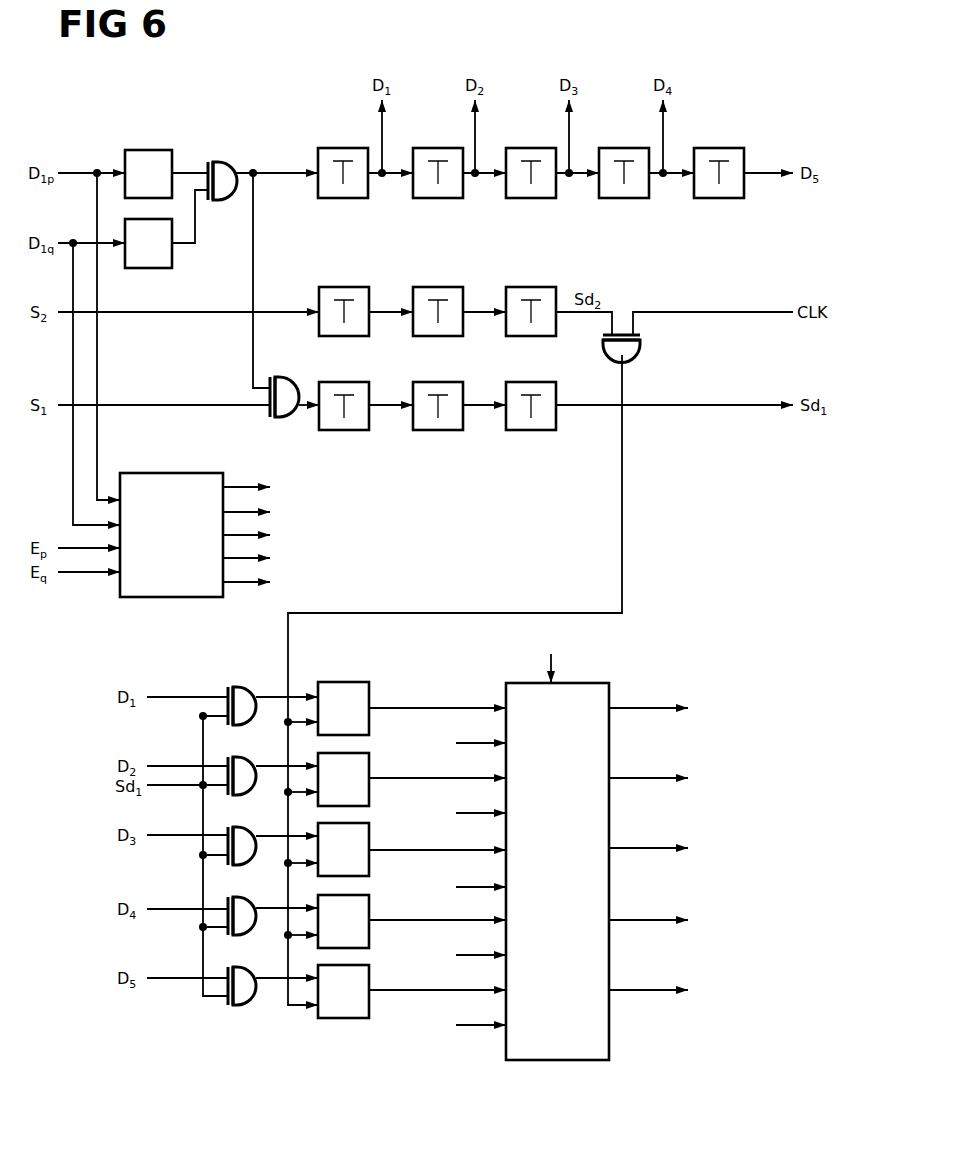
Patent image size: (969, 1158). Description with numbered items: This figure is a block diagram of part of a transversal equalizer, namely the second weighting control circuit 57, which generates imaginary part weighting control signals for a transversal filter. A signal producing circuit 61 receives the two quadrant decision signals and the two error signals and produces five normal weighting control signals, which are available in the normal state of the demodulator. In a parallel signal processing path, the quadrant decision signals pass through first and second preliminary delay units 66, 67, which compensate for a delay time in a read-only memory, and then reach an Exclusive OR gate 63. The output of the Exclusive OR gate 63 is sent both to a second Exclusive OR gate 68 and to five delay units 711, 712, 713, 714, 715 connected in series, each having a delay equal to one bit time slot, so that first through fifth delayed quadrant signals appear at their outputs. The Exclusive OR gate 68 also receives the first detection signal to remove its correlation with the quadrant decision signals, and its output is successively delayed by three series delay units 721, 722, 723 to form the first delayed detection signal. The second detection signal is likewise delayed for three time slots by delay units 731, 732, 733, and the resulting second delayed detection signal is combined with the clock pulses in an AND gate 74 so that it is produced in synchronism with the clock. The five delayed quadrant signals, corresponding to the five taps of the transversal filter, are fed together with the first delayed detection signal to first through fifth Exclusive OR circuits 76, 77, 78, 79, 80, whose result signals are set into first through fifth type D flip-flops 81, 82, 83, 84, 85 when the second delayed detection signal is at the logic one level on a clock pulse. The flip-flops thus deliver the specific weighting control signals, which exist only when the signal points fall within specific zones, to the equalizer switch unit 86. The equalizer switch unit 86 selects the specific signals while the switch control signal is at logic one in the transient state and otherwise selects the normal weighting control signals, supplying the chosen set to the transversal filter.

The second weighting control circuit 57 is at (214, 1058).
The signal producing circuit 61 is at (192, 473).
The Exclusive OR gate 63 is at (226, 162).
The first preliminary delay unit 66 is at (146, 150).
The second preliminary delay unit 67 is at (160, 268).
The Exclusive OR gate 68 is at (283, 377).
The AND gate 74 is at (640, 348).
The first Exclusive OR circuit 76 is at (240, 687).
The second Exclusive OR circuit 77 is at (240, 757).
The third Exclusive OR circuit 78 is at (240, 827).
The fourth Exclusive OR circuit 79 is at (240, 897).
The fifth Exclusive OR circuit 80 is at (240, 967).
The first type D flip-flop 81 is at (370, 722).
The second type D flip-flop 82 is at (370, 793).
The third type D flip-flop 83 is at (370, 863).
The fourth type D flip-flop 84 is at (370, 935).
The fifth type D flip-flop 85 is at (370, 1005).
The equalizer switch unit 86 is at (583, 683).
The delay unit 711 is at (354, 136).
The delay unit 712 is at (449, 136).
The delay unit 713 is at (542, 136).
The delay unit 714 is at (635, 136).
The delay unit 715 is at (730, 136).
The delay unit 721 is at (355, 370).
The delay unit 722 is at (449, 370).
The delay unit 723 is at (542, 370).
The delay unit 731 is at (355, 275).
The delay unit 732 is at (449, 275).
The delay unit 733 is at (542, 275).